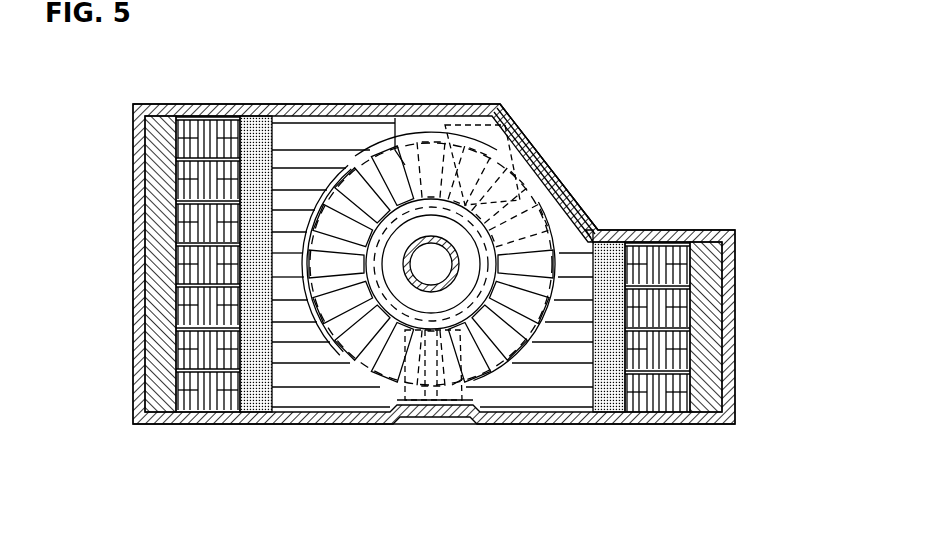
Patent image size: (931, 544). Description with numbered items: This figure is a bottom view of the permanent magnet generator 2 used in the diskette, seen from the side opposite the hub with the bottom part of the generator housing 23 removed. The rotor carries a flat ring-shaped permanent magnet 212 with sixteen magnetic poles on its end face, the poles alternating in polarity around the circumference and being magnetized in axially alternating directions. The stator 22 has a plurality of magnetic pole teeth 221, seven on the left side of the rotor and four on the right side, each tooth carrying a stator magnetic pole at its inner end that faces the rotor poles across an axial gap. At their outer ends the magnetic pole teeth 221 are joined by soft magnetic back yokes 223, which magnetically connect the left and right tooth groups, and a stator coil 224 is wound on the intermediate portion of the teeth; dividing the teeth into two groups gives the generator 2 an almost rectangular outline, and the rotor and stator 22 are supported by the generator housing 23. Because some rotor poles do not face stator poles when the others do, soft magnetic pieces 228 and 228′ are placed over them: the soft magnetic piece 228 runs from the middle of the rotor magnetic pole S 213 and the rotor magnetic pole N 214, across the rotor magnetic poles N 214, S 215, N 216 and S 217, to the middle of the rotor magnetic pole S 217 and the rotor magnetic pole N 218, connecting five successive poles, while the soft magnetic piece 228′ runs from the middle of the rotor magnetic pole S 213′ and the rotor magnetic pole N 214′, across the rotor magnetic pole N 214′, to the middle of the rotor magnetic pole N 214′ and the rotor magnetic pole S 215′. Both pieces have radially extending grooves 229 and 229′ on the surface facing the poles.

The permanent magnet generator 2 is at (781, 112).
The stator 22 is at (606, 234).
The generator housing 23 is at (335, 430).
The flat ring-shaped permanent magnet 212 is at (330, 200).
The rotor magnetic pole S213 213 is at (372, 150).
The rotor magnetic pole N214 214 is at (445, 140).
The rotor magnetic pole S215 215 is at (500, 190).
The rotor magnetic pole N216 216 is at (528, 190).
The rotor magnetic pole S217 217 is at (565, 225).
The rotor magnetic pole N218 218 is at (590, 234).
The magnetic pole teeth 221 is at (320, 395).
The soft magnetic back yoke 223 is at (730, 236).
The stator coil 224 is at (668, 270).
The soft magnetic piece 228 is at (410, 130).
The groove 229 is at (490, 150).
The rotor magnetic pole S213′ 213′ is at (485, 420).
The rotor magnetic pole N214′ 214′ is at (418, 420).
The rotor magnetic pole S215′ 215′ is at (398, 424).
The soft magnetic piece 228′ is at (440, 420).
The groove 229′ is at (440, 420).